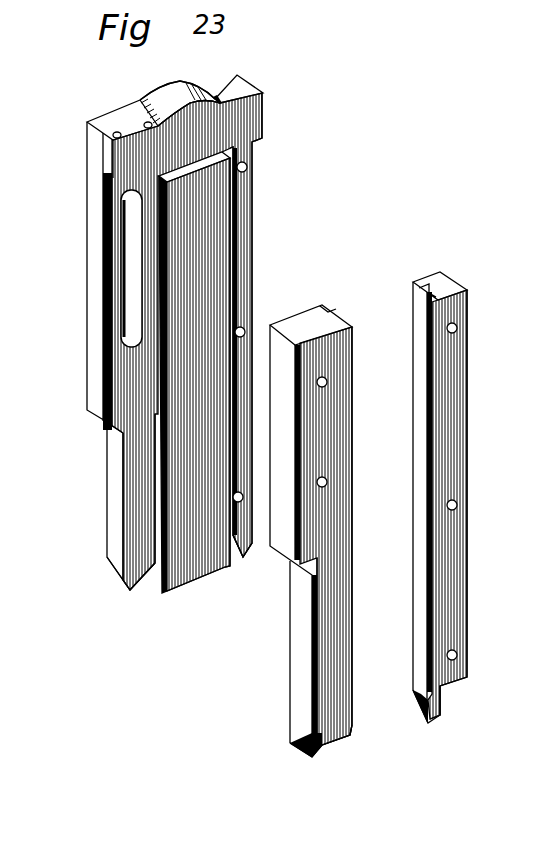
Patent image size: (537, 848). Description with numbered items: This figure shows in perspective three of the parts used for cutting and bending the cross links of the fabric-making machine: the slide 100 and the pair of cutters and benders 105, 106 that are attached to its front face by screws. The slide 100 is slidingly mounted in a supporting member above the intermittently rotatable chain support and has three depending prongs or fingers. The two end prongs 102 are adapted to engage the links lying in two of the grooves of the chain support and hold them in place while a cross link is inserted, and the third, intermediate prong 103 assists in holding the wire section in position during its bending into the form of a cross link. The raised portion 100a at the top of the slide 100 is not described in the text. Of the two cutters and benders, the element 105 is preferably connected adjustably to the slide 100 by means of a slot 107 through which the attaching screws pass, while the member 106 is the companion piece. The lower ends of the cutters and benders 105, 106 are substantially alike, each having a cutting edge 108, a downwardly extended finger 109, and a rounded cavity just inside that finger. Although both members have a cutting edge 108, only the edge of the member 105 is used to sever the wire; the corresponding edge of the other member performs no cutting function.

The slide 100 is at (88, 370).
The raised hump on top of bar 100a is at (183, 82).
The end prongs 102 is at (126, 584).
The intermediate prong 103 is at (186, 578).
The cutter and bender 105 is at (346, 509).
The cutter and bender 106 is at (461, 463).
The slot 107 is at (100, 259).
The cutting edge 108 is at (309, 752).
The downwardly extended finger 109 is at (338, 750).